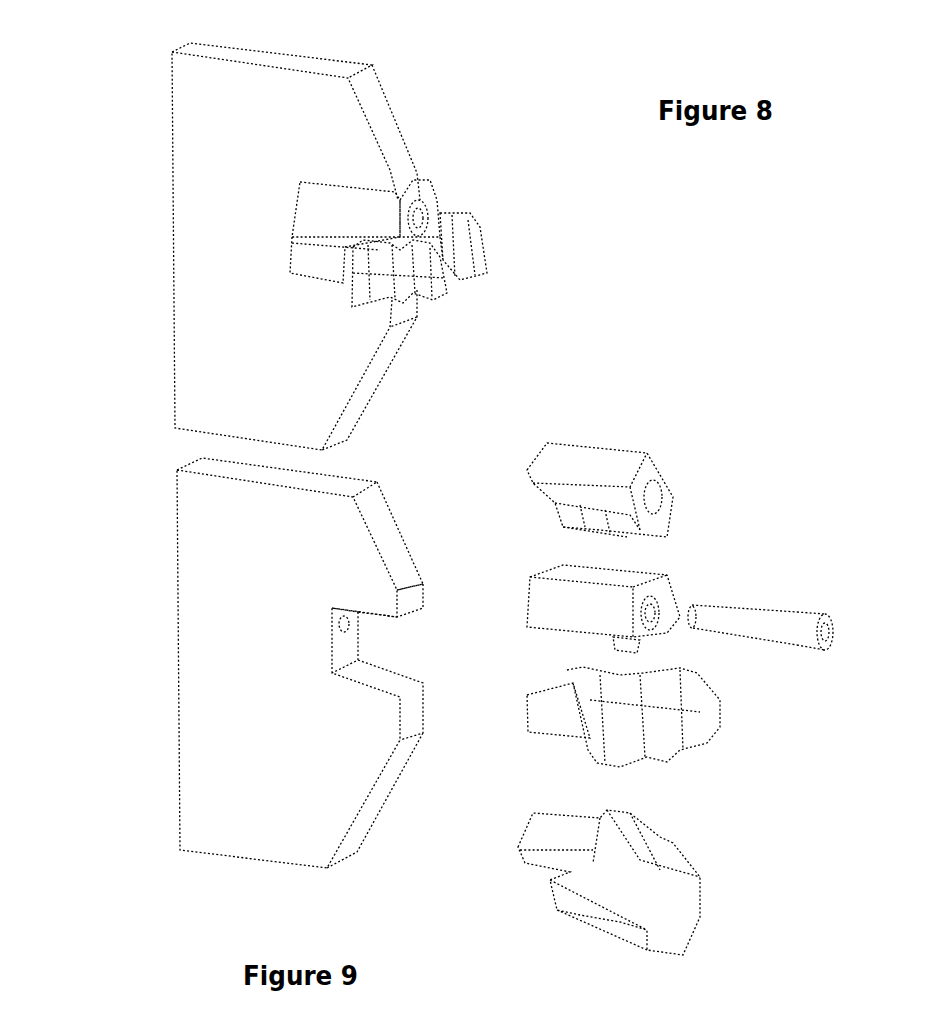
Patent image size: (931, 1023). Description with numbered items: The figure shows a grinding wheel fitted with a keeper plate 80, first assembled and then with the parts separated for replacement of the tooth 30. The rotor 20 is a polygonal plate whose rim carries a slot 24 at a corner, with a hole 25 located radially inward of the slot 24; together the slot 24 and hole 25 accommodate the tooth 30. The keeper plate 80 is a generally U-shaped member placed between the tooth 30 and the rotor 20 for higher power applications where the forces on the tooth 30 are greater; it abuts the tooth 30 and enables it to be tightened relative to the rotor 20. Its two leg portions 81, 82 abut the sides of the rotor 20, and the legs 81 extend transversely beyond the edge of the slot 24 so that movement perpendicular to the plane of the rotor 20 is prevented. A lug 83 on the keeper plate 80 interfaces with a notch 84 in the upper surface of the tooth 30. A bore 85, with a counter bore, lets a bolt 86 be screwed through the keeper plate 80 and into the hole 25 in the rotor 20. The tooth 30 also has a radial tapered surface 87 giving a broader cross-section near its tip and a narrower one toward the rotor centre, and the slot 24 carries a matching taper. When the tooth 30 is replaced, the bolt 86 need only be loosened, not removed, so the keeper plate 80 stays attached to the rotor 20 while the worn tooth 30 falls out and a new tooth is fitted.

In FIG. 8, the rotor 20 is at (212, 155).
In FIG. 9, the rotor 20 is at (424, 514).
In FIG. 9, the slot 24 is at (382, 645).
In FIG. 9, the hole 25 is at (345, 624).
In FIG. 8, the tooth 30 is at (509, 230).
In FIG. 9, the tooth 30 is at (718, 811).
In FIG. 8, the keeper plate 80 is at (438, 152).
In FIG. 9, the keeper plate 80 is at (723, 491).
In FIG. 8, the leg portion 81 is at (307, 197).
In FIG. 9, the leg portion 81 is at (540, 478).
In FIG. 8, the leg portion 82 is at (430, 175).
In FIG. 9, the leg portion 82 is at (564, 512).
In FIG. 9, the lug 83 is at (628, 645).
In FIG. 9, the notch 84 is at (637, 692).
In FIG. 9, the bore 85 is at (660, 612).
In FIG. 9, the bolt 86 is at (765, 612).
In FIG. 9, the tapered surface 87 is at (600, 883).